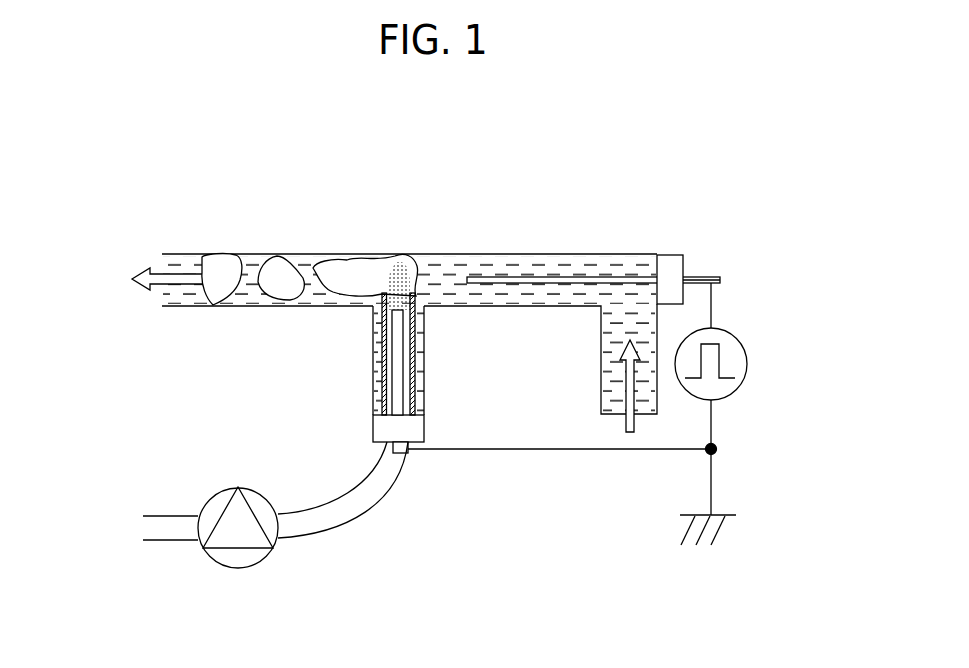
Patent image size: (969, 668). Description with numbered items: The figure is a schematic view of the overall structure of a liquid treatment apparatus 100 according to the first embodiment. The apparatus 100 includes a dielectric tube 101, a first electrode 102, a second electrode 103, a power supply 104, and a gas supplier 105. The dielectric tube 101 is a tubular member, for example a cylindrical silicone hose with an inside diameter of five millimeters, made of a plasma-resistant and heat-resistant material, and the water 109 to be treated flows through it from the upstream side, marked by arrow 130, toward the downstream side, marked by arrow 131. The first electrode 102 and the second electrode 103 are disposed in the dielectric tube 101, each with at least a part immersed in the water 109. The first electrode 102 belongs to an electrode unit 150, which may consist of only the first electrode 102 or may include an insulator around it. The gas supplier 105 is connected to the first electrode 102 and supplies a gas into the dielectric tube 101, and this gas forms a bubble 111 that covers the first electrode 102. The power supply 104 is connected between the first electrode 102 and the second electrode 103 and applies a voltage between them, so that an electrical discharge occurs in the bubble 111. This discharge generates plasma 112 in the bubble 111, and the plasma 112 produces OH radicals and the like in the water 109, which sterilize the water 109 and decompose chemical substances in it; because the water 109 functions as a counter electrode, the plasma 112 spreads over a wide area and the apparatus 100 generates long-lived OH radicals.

The liquid treatment apparatus 100 is at (227, 139).
The dielectric tube 101 is at (613, 252).
The first electrode 102 is at (398, 456).
The second electrode 103 is at (698, 279).
The power supply 104 is at (747, 359).
The gas supplier 105 is at (238, 569).
The water to be treated 109 is at (527, 268).
The bubble 111 is at (352, 268).
The plasma 112 is at (403, 277).
The arrow (upstream side) 130 is at (629, 383).
The arrow (downstream side) 131 is at (185, 277).
The electrode unit 150 is at (398, 354).